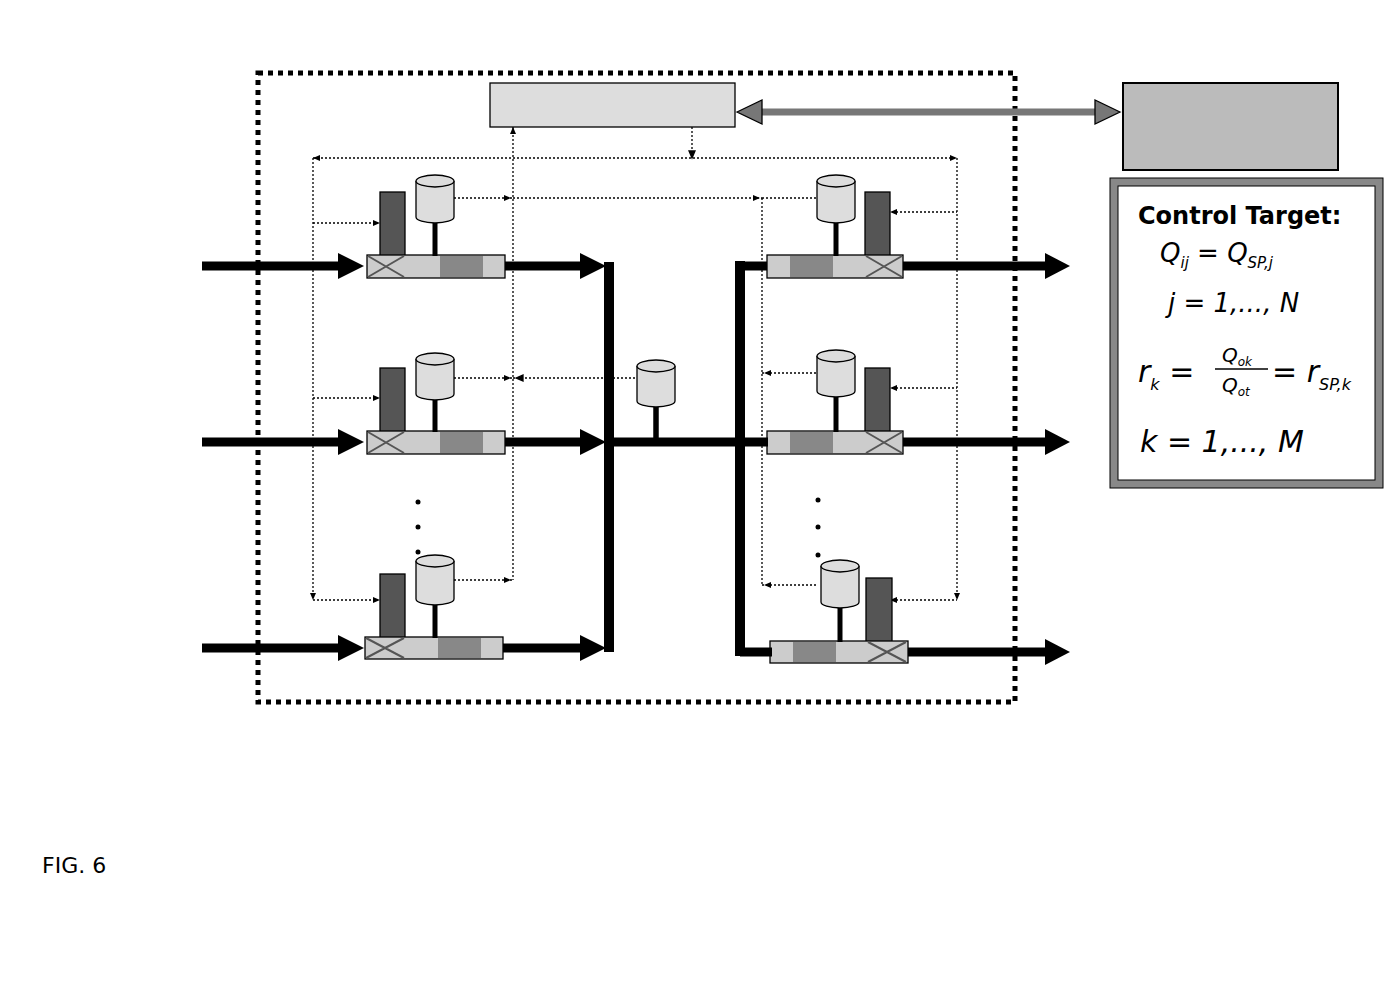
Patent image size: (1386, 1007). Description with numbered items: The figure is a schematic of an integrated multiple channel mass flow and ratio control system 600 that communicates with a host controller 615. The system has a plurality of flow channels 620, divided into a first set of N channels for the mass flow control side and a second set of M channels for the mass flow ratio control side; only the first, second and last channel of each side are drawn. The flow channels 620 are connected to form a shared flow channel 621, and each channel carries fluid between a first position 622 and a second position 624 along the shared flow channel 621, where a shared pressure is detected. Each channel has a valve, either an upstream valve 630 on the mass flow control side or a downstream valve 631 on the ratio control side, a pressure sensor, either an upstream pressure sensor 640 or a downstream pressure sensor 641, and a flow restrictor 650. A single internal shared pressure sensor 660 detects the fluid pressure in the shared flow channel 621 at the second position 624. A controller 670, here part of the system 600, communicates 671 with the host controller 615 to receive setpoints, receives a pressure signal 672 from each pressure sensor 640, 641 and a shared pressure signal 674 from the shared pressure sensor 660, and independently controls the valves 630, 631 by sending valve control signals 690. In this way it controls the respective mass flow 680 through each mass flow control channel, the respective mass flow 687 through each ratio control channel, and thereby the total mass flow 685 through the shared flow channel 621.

The integrated multiple channel mass flow and ratio control system 600 is at (636, 363).
The host controller 615 is at (1243, 83).
The flow channel 620 is at (548, 279).
The shared flow channel 621 is at (697, 452).
The first position 622 is at (213, 272).
The second position 624 is at (655, 460).
The upstream valve 630 is at (380, 209).
The downstream valve 631 is at (890, 199).
The upstream pressure sensor 640 is at (452, 197).
The downstream pressure sensor 641 is at (813, 195).
The flow restrictor 650 is at (458, 273).
The shared pressure sensor 660 is at (648, 361).
The controller 670 is at (735, 97).
The communication 671 is at (928, 104).
The pressure signal 672 is at (485, 208).
The shared pressure signal 674 is at (575, 378).
The mass flow 680 is at (557, 425).
The total mass flow 685 is at (659, 457).
The mass flow 687 is at (1083, 429).
The valve control signal 690 is at (697, 143).